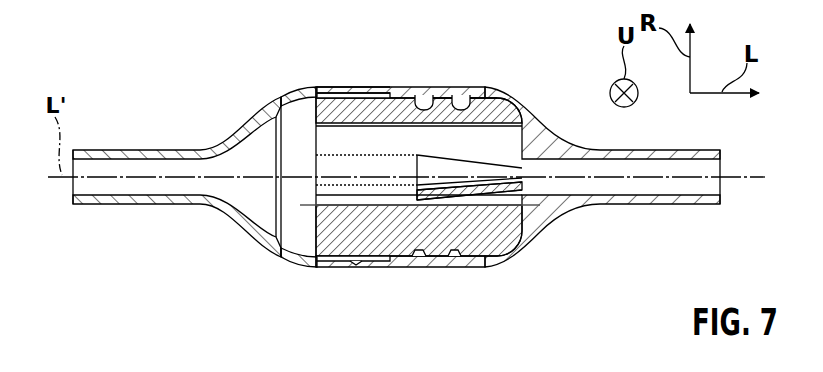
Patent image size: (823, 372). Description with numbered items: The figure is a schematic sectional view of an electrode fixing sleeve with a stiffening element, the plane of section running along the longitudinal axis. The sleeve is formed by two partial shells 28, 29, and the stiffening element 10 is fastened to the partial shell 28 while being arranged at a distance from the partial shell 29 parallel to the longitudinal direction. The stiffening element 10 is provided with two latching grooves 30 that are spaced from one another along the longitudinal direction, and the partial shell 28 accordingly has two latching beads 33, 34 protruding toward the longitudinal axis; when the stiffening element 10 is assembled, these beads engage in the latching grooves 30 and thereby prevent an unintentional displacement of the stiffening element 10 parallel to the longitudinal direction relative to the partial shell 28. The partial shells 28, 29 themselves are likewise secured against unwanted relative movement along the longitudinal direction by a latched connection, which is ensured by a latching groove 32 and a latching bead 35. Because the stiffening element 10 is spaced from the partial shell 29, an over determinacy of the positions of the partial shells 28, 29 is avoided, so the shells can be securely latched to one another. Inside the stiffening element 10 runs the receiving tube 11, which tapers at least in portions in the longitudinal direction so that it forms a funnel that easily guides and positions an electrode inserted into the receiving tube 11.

The stiffening element 10 is at (314, 240).
The receiving tube 11 is at (309, 162).
The partial shell 28 is at (504, 258).
The partial shell 29 is at (279, 99).
The latching grooves 30 is at (421, 100).
The latching groove 32 is at (357, 90).
The latching bead 33 is at (434, 98).
The latching bead 34 is at (478, 103).
The latching bead 35 is at (363, 88).